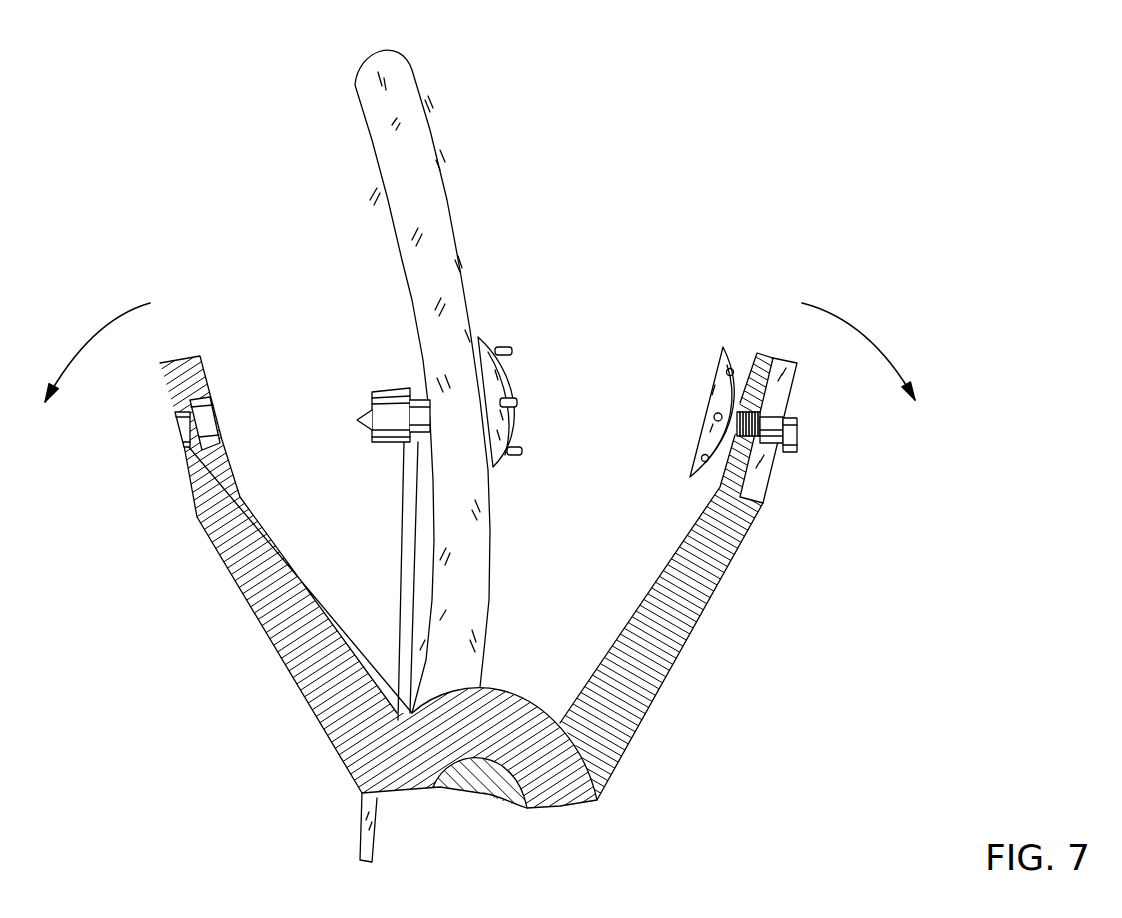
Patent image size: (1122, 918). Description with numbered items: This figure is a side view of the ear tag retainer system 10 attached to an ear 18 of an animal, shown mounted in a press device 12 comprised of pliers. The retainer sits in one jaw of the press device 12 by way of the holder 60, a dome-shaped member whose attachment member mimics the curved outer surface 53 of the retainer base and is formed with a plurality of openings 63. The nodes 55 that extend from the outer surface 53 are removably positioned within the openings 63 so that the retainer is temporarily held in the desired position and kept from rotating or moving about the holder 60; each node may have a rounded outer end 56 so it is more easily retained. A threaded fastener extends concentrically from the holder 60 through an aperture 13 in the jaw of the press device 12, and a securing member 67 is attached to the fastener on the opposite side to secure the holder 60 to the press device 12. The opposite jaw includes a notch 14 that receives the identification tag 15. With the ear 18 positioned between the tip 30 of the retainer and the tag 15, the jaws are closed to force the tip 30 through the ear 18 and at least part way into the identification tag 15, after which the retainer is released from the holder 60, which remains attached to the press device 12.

The ear tag retainer system 10 is at (963, 113).
The press device 12 is at (295, 678).
The aperture 13 is at (765, 450).
The notch 14 is at (185, 437).
The identification tag 15 is at (367, 382).
The ear 18 is at (410, 73).
The tip 30 is at (358, 422).
The outer surface 53 is at (535, 409).
The nodes 55 is at (497, 345).
The rounded outer end 56 is at (512, 351).
The holder 60 is at (716, 417).
The openings 63 is at (733, 368).
The securing member 67 is at (797, 440).